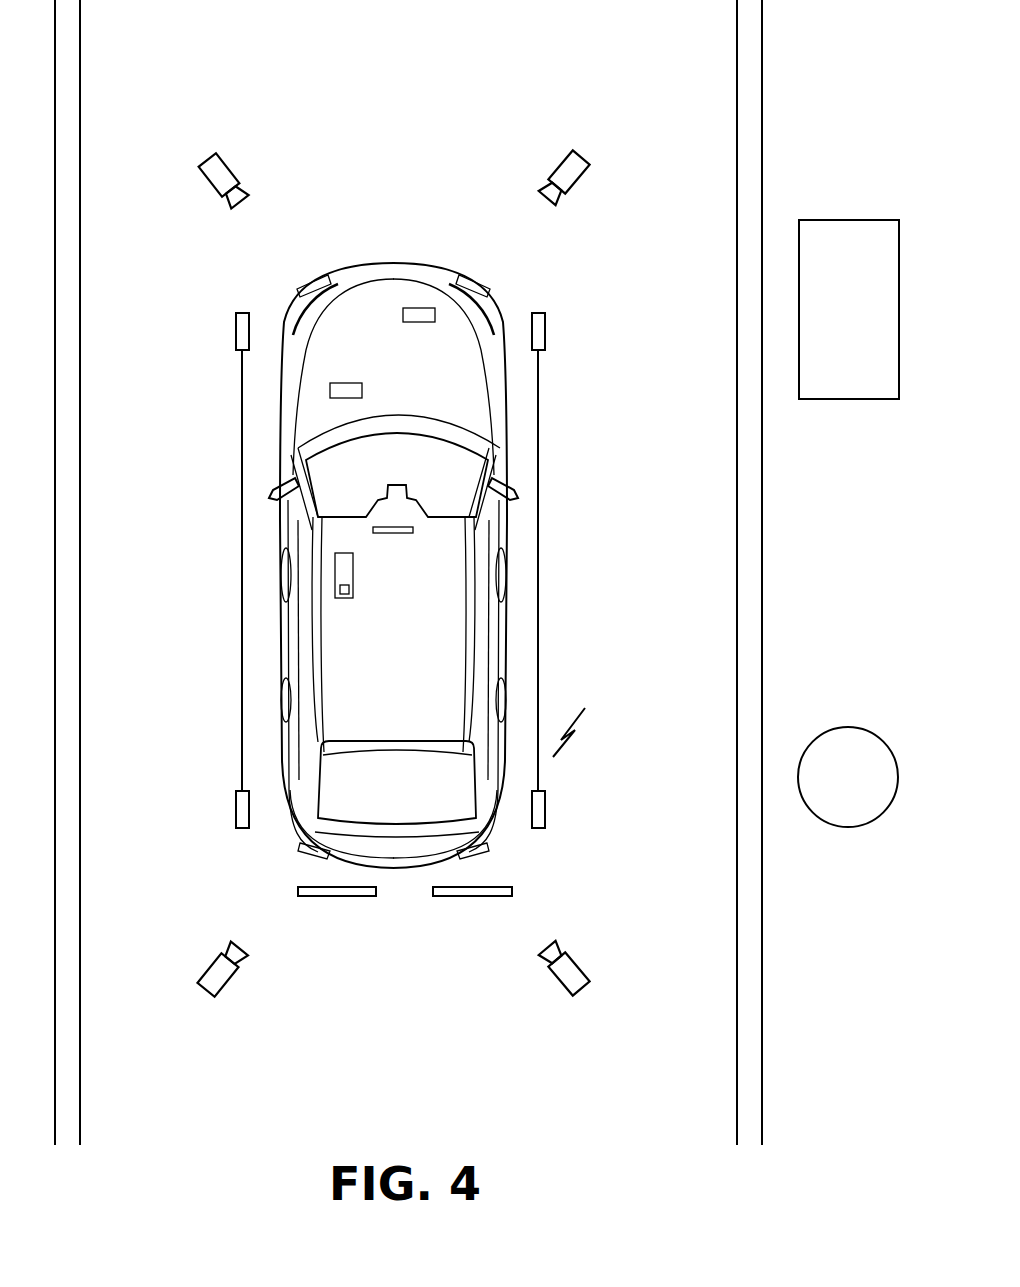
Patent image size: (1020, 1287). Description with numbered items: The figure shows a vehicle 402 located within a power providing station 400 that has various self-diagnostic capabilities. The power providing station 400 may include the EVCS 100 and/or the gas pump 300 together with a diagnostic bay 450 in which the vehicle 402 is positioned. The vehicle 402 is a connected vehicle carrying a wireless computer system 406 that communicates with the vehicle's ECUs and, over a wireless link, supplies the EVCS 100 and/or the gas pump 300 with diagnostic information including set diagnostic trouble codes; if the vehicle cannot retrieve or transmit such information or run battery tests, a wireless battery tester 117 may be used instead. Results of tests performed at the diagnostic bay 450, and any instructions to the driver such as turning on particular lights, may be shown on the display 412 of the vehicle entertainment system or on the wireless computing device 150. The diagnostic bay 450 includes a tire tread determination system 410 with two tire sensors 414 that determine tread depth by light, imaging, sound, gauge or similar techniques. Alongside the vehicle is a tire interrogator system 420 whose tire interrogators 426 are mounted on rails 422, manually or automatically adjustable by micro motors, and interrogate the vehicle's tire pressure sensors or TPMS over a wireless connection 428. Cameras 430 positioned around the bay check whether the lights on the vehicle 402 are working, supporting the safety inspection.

The power providing station 400 is at (391, 84).
The diagnostic bay 450 is at (373, 207).
The tire tread determination system 410 is at (378, 971).
The gas pump 300 is at (831, 322).
The EVCS 100 is at (831, 790).
The cameras 430 is at (238, 174).
The tire interrogator system 420 is at (194, 492).
The rails 422 is at (540, 555).
The tire interrogator 426 is at (546, 330).
The tire sensor 414 is at (514, 886).
The wireless connection 428 is at (580, 732).
The vehicle 402 is at (378, 708).
The wireless computer system 406 is at (342, 382).
The wireless battery tester 117 is at (418, 323).
The display 412 is at (400, 535).
The wireless computing device 150 is at (355, 573).